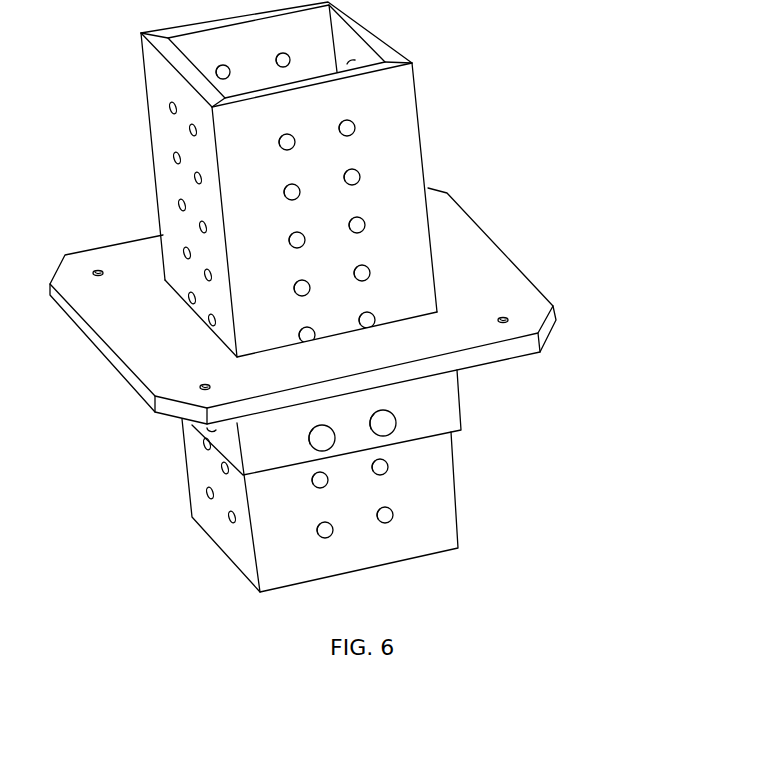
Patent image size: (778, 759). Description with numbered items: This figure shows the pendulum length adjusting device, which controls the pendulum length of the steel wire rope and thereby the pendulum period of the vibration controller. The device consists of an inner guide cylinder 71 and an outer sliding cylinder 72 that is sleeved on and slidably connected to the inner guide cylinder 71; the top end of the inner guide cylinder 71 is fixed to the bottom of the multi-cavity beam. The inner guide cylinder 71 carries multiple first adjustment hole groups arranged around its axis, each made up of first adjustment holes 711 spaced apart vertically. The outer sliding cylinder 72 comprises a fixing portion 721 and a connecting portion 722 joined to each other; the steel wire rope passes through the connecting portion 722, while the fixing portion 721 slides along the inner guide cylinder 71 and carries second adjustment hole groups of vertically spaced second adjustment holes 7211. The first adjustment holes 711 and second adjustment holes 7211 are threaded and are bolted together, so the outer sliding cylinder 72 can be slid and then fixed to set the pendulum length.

The inner guide cylinder 71 is at (342, 179).
The first adjustment holes 711 is at (353, 124).
The outer sliding cylinder 72 is at (363, 390).
The fixing portion 721 is at (406, 480).
The second adjustment holes 7211 is at (382, 411).
The connecting portion 722 is at (482, 265).